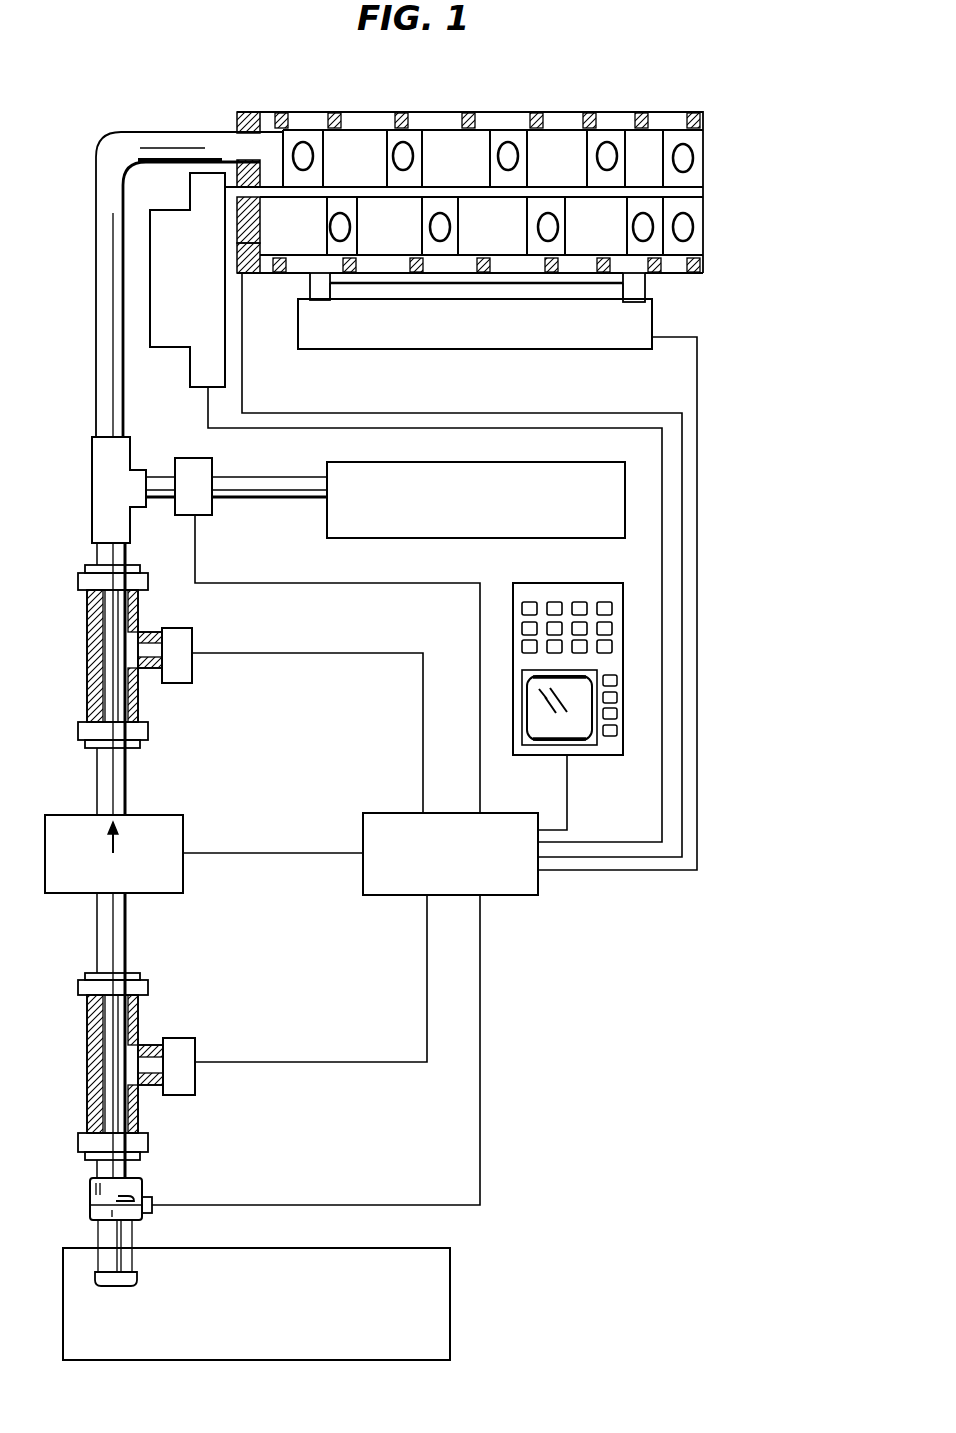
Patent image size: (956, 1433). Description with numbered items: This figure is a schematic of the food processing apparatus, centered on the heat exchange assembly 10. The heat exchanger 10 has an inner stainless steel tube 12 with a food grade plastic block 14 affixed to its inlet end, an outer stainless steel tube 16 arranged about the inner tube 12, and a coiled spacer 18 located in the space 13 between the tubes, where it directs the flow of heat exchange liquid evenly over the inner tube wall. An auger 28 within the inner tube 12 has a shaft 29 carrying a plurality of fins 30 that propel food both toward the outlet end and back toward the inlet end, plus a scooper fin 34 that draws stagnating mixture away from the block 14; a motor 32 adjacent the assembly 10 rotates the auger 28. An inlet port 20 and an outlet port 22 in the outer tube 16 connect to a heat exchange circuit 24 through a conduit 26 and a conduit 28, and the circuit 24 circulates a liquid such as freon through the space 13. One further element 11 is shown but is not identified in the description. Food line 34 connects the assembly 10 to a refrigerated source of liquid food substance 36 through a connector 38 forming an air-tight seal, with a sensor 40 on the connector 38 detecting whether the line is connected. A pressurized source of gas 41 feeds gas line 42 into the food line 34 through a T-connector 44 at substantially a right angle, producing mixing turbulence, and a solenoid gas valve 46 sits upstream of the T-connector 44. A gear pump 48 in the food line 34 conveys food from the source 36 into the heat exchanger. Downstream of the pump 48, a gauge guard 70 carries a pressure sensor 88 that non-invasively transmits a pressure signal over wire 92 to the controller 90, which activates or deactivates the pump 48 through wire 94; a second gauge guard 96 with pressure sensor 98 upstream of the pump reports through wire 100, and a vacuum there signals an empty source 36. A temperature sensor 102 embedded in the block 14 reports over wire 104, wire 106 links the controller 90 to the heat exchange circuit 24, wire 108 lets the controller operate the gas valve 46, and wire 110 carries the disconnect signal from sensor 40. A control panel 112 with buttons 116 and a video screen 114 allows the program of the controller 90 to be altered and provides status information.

The heat exchange assembly 10 is at (717, 142).
The gas supply conduit 11 is at (237, 128).
The inner stainless steel tube 12 is at (441, 131).
The space between inner and outer tubes 13 is at (390, 263).
The food grade plastic block 14 is at (235, 127).
The outer stainless steel tube 16 is at (440, 113).
The coiled spacer 18 is at (533, 113).
The inlet port 20 is at (645, 280).
The outlet port 22 is at (327, 283).
The heat exchange circuit 24 is at (477, 292).
The conduit 26 is at (620, 292).
The auger 28 is at (705, 188).
The shaft 29 is at (388, 201).
The fins 30 is at (586, 168).
The motor 32 is at (173, 283).
The food line 34 is at (262, 257).
The refrigerated source of liquid food substance 36 is at (378, 1247).
The connector 38 is at (143, 1183).
The sensor 40 is at (153, 1212).
The pressurized source of gas 41 is at (465, 526).
The gas line 42 is at (242, 504).
The T-connector 44 is at (130, 447).
The solenoid gas valve 46 is at (213, 461).
The gear pump 48 is at (183, 818).
The gauge guard 70 is at (143, 621).
The pressure sensor 88 is at (193, 634).
The controller 90 is at (400, 813).
The wire 92 is at (293, 653).
The wire 94 is at (270, 855).
The second gauge guard 96 is at (145, 1033).
The pressure sensor 98 is at (195, 1046).
The wire 100 is at (317, 1061).
The temperature sensor 102 is at (248, 273).
The wire 104 is at (277, 413).
The wire 106 is at (697, 388).
The wire 108 is at (388, 588).
The wire 110 is at (483, 991).
The control panel 112 is at (593, 766).
The video screen 114 is at (552, 736).
The buttons 116 is at (578, 604).